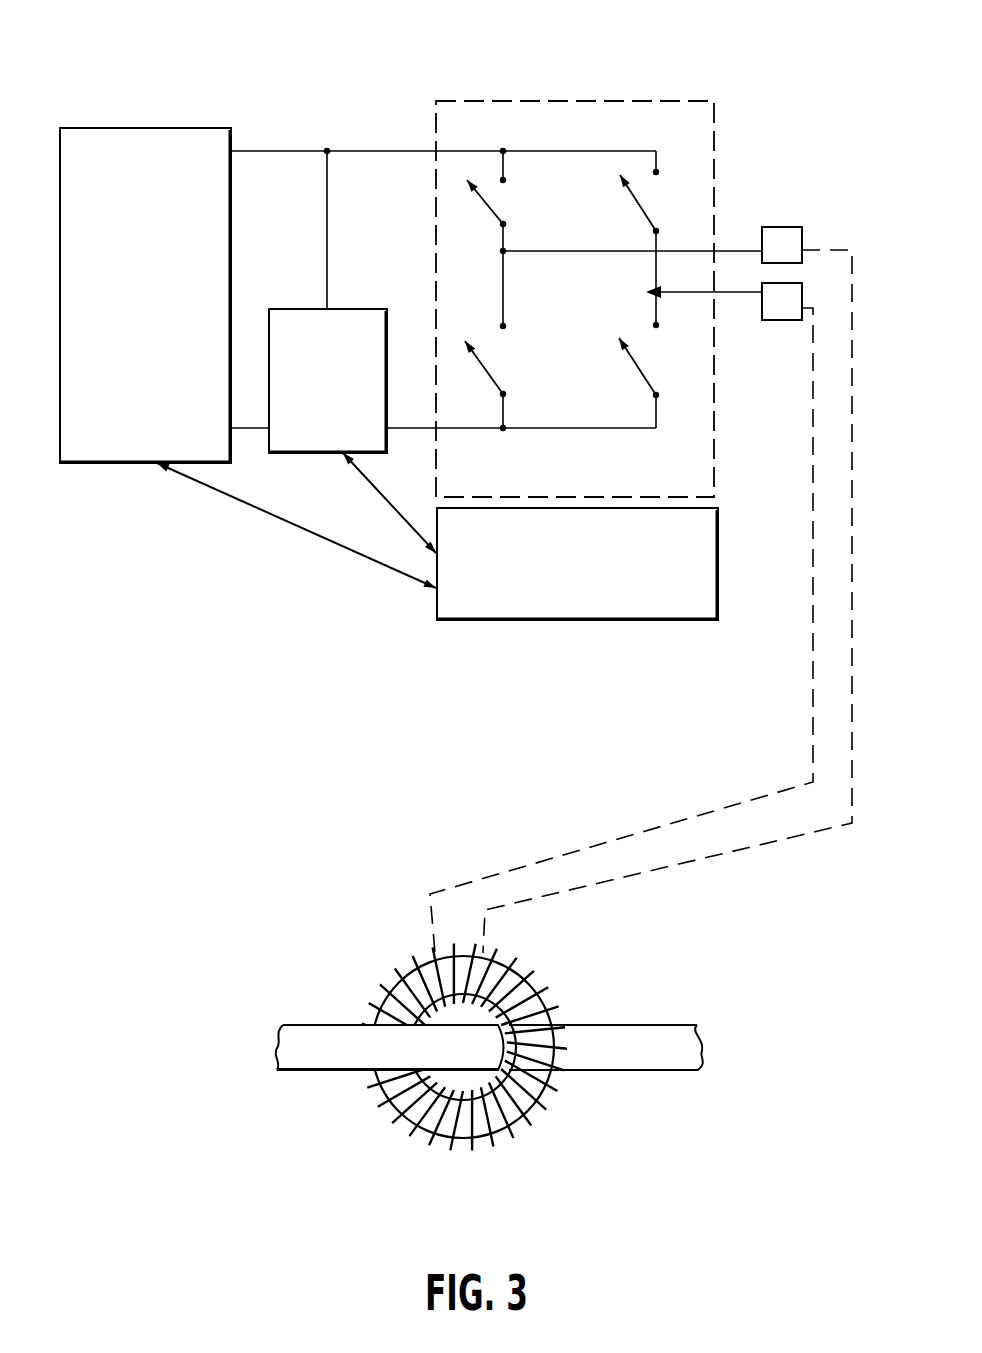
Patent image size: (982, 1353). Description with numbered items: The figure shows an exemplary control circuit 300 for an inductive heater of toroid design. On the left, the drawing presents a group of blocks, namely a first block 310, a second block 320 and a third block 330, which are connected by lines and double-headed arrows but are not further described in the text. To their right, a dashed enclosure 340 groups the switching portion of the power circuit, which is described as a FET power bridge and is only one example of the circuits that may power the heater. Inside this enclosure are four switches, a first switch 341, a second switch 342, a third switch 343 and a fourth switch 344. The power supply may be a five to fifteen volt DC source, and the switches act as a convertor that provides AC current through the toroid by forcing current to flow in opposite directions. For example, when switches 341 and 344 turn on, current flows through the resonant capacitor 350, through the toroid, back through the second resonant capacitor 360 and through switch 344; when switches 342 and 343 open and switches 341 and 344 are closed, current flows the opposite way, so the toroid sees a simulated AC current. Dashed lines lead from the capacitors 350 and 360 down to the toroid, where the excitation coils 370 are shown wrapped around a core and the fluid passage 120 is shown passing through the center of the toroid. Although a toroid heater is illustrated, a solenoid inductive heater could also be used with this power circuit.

The current sensing system 300 is at (173, 74).
The controller 310 is at (163, 291).
The processing unit 320 is at (352, 381).
The memory / storage unit 330 is at (593, 579).
The switching network 340 is at (716, 96).
The switch 341 is at (495, 213).
The switch 342 is at (642, 212).
The switch 343 is at (493, 373).
The switch 344 is at (640, 375).
The resonant capacitor 350 is at (778, 227).
The second resonant capacitor 360 is at (786, 320).
The excitation coils 370 is at (545, 1103).
The fluid passage 120 is at (675, 1060).